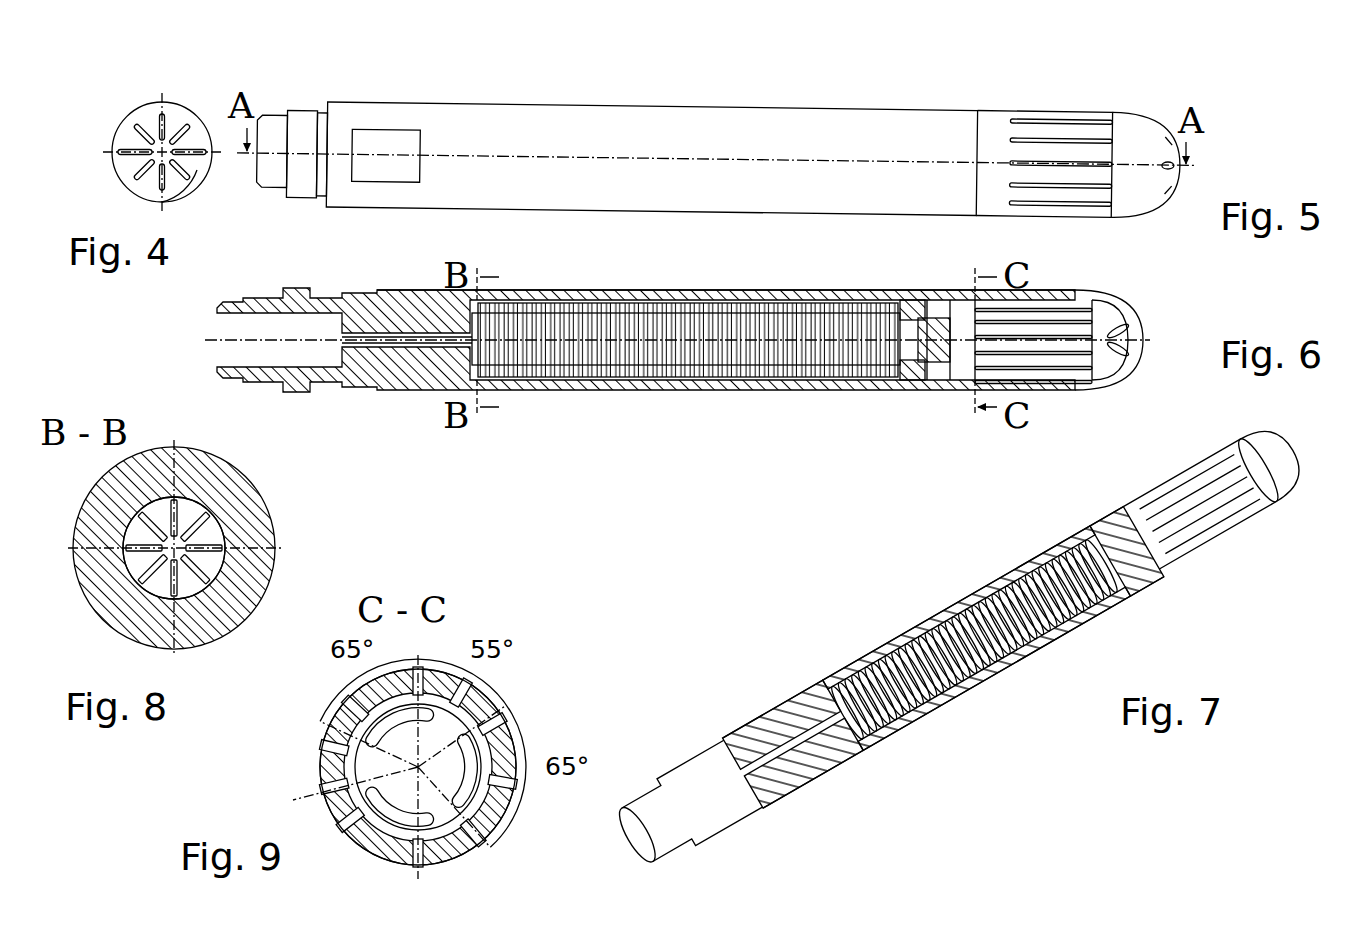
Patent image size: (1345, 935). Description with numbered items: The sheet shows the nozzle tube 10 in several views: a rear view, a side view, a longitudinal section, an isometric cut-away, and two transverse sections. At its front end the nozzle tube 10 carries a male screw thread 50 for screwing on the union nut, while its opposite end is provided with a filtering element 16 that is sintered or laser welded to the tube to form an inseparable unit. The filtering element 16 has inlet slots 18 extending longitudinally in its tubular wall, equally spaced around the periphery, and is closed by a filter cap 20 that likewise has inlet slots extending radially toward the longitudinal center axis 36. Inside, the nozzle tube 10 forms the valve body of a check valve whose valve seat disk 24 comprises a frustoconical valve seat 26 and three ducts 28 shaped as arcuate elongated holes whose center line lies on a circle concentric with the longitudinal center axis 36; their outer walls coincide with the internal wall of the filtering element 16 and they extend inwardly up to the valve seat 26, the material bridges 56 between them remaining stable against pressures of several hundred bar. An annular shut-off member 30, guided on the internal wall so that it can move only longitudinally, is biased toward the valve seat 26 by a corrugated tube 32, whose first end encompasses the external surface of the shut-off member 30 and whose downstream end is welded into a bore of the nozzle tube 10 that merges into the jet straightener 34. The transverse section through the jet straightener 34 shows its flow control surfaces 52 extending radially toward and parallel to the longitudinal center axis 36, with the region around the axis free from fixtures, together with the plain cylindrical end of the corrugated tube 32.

In FIG. 4, the nozzle tube 10 is at (124, 104).
In FIG. 5, the nozzle tube 10 is at (638, 125).
In FIG. 6, the nozzle tube 10 is at (650, 290).
In FIG. 7, the nozzle tube 10 is at (875, 640).
In FIG. 8, the nozzle tube 10 is at (215, 487).
In FIG. 5, the filtering element 16 is at (1026, 100).
In FIG. 9, the filtering element 16 is at (418, 727).
In FIG. 5, the inlet slots 18 is at (1088, 112).
In FIG. 9, the inlet slots 18 is at (457, 767).
In FIG. 4, the filter cap 20 is at (197, 172).
In FIG. 5, the filter cap 20 is at (1143, 125).
In FIG. 6, the valve seat disk 24 is at (955, 336).
In FIG. 9, the valve seat disk 24 is at (468, 757).
In FIG. 6, the valve seat 26 is at (938, 385).
In FIG. 9, the ducts 28 is at (410, 794).
In FIG. 6, the shut-off member 30 is at (908, 305).
In FIG. 6, the corrugated tube 32 is at (668, 386).
In FIG. 8, the corrugated tube 32 is at (225, 578).
In FIG. 6, the jet straightener 34 is at (405, 395).
In FIG. 4, the longitudinal center axis 36 is at (158, 153).
In FIG. 6, the longitudinal center axis 36 is at (320, 328).
In FIG. 8, the longitudinal center axis 36 is at (130, 582).
In FIG. 9, the longitudinal center axis 36 is at (384, 767).
In FIG. 5, the male screw thread 50 is at (302, 112).
In FIG. 8, the flow control surfaces 52 is at (152, 520).
In FIG. 9, the material bridges 56 is at (400, 766).